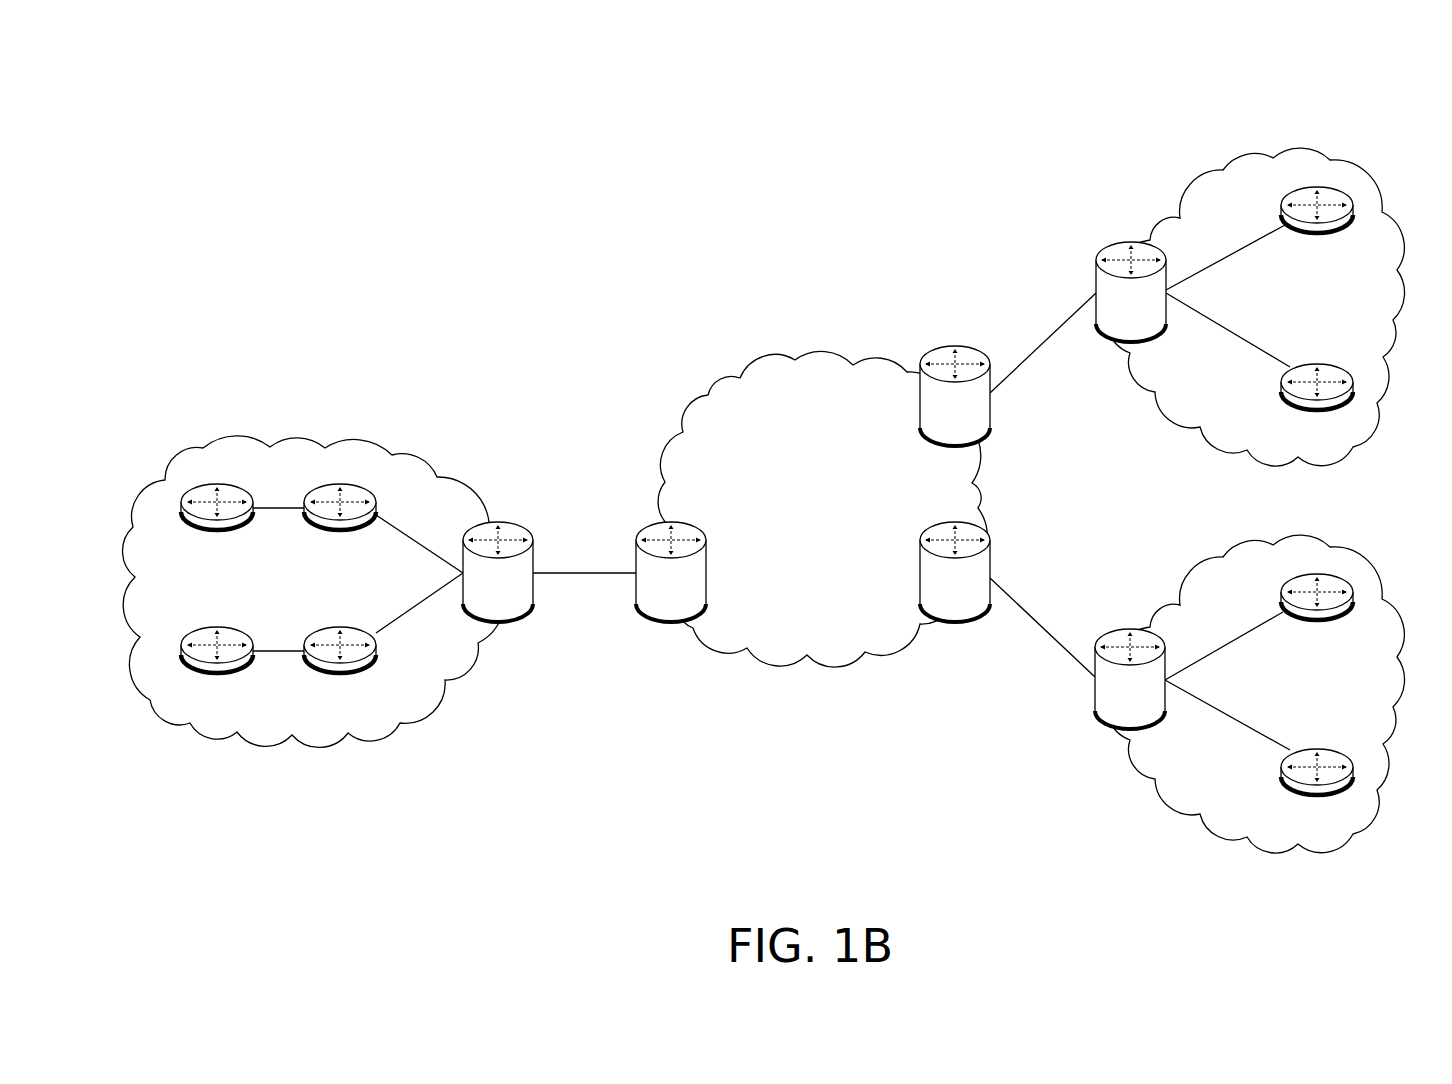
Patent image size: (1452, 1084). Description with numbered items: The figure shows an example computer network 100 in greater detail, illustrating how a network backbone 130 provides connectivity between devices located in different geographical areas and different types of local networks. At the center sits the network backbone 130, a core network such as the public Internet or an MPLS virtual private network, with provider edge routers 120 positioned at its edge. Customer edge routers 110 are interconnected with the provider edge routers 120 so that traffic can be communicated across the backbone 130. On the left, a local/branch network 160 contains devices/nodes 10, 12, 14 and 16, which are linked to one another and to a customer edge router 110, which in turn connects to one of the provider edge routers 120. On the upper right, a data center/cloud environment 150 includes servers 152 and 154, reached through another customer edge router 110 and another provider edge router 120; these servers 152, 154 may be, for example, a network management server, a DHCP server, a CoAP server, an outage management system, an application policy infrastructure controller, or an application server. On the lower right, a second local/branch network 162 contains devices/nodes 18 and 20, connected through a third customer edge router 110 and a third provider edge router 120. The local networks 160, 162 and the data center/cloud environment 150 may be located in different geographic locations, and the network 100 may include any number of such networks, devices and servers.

The computer network 100 is at (1357, 88).
The device/node 10 is at (217, 524).
The device/node 12 is at (340, 524).
The device/node 14 is at (217, 667).
The device/node 16 is at (340, 667).
The device/node 18 is at (1317, 789).
The device/node 20 is at (1317, 614).
The customer edge router 110 is at (481, 612).
The provider edge router 120 is at (654, 612).
The network backbone 130 is at (803, 531).
The data center/cloud environment 150 is at (1225, 168).
The server 152 is at (1317, 225).
The server 154 is at (1317, 402).
The local/branch network 160 is at (356, 432).
The local/branch network 162 is at (1145, 777).